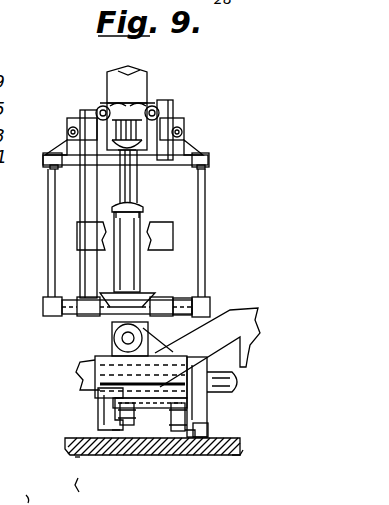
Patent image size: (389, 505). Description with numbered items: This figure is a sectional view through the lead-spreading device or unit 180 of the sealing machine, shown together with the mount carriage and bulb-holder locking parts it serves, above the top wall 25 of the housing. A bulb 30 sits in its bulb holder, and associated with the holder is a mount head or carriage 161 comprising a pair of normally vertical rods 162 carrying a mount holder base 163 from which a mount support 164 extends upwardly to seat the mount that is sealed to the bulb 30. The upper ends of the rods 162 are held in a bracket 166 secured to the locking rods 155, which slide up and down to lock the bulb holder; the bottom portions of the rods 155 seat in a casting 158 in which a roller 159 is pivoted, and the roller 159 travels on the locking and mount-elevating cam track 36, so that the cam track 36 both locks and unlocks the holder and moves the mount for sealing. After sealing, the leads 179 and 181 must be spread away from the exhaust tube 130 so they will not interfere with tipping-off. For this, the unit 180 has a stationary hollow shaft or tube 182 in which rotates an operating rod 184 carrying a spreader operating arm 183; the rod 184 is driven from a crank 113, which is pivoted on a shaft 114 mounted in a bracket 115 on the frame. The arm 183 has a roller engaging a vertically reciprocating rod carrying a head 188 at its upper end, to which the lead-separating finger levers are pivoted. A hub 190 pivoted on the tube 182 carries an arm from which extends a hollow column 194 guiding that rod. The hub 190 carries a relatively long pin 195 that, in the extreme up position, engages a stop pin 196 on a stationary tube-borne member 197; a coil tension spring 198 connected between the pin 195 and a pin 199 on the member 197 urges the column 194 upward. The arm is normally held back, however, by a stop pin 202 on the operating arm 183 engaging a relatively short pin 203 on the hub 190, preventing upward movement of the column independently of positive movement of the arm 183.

The top wall 25 is at (68, 440).
The bulb 30 is at (141, 79).
The locking and mount-elevating cam track 36 is at (247, 310).
The crank 113 is at (23, 489).
The shaft 114 is at (73, 468).
The bracket 115 is at (61, 491).
The exhaust tube 130 is at (209, 163).
The locking rods 155 is at (86, 198).
The casting 158 is at (84, 313).
The roller 159 is at (112, 340).
The mount head or carriage 161 is at (59, 147).
The rods 162 is at (47, 250).
The mount holder base 163 is at (46, 303).
The mount support 164 is at (143, 203).
The bracket 166 is at (185, 134).
The lead 179 is at (92, 170).
The lead-spreading device or unit 180 is at (102, 105).
The lead 181 is at (198, 152).
The stationary hollow shaft or tube 182 is at (200, 372).
The spreader operating arm 183 is at (99, 412).
The operating rod 184 is at (241, 385).
The head 188 is at (177, 112).
The hub 190 is at (152, 400).
The hollow column 194 is at (141, 274).
The pin 195 is at (197, 437).
The stop pin 196 is at (176, 428).
The stationary tube-borne member 197 is at (212, 318).
The coil tension spring 198 is at (217, 456).
The pin 199 is at (205, 427).
The stop pin 202 is at (117, 432).
The pin 203 is at (120, 424).